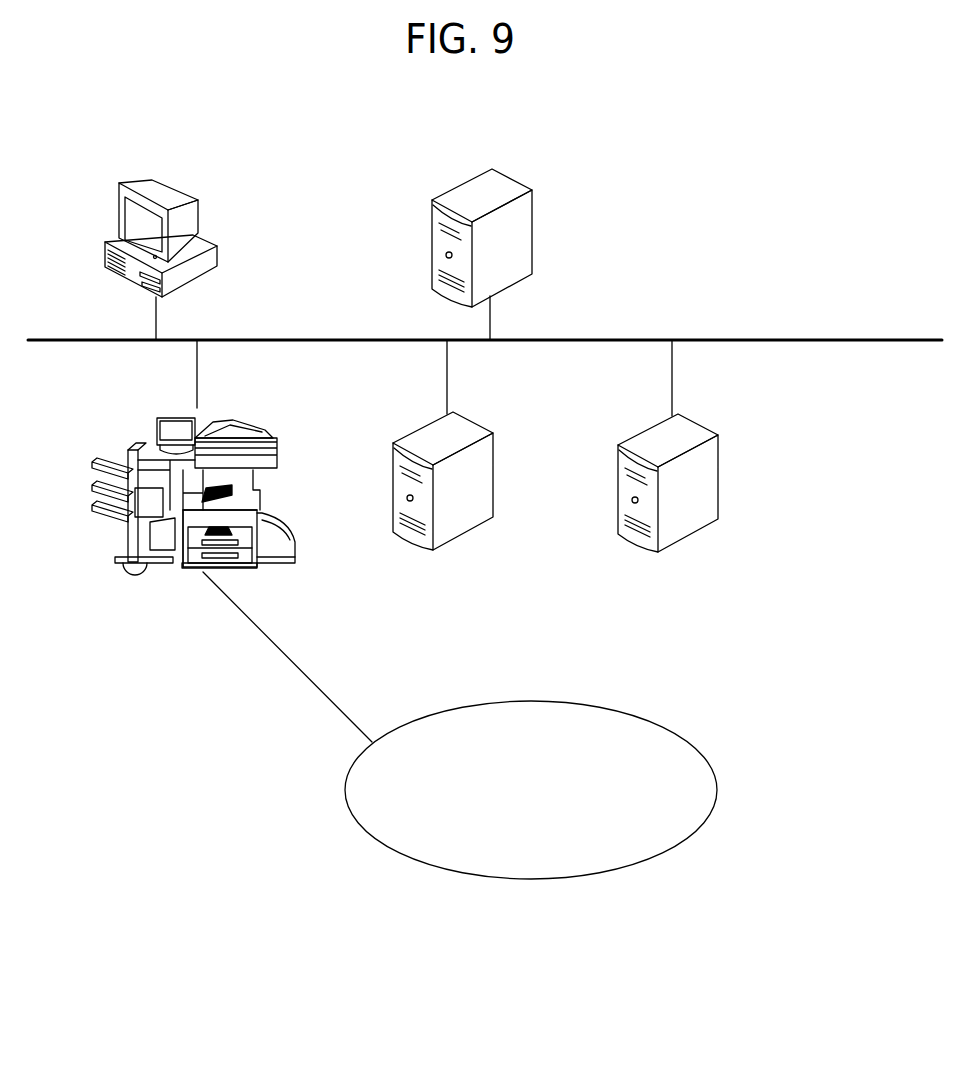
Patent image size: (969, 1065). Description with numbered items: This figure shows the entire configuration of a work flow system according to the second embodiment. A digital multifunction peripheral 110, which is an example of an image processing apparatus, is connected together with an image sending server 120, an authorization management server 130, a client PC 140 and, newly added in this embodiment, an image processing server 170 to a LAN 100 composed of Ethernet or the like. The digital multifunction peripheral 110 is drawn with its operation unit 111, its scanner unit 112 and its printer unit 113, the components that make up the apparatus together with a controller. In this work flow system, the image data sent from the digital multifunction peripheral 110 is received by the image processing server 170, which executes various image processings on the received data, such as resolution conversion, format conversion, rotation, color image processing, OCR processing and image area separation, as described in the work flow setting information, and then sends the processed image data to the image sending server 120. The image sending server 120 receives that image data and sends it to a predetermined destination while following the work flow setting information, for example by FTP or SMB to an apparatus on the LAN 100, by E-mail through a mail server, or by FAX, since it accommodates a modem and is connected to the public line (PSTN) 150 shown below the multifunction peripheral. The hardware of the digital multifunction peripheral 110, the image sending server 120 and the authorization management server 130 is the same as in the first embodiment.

The LAN 100 is at (742, 338).
The digital multifunction peripheral 110 is at (206, 497).
The operation unit 111 is at (163, 418).
The scanner unit 112 is at (240, 432).
The printer unit 113 is at (245, 568).
The image sending server 120 is at (720, 500).
The authorization management server 130 is at (432, 218).
The client PC 140 is at (118, 203).
The public line (PSTN) 150 is at (678, 845).
The image processing server 170 is at (493, 498).